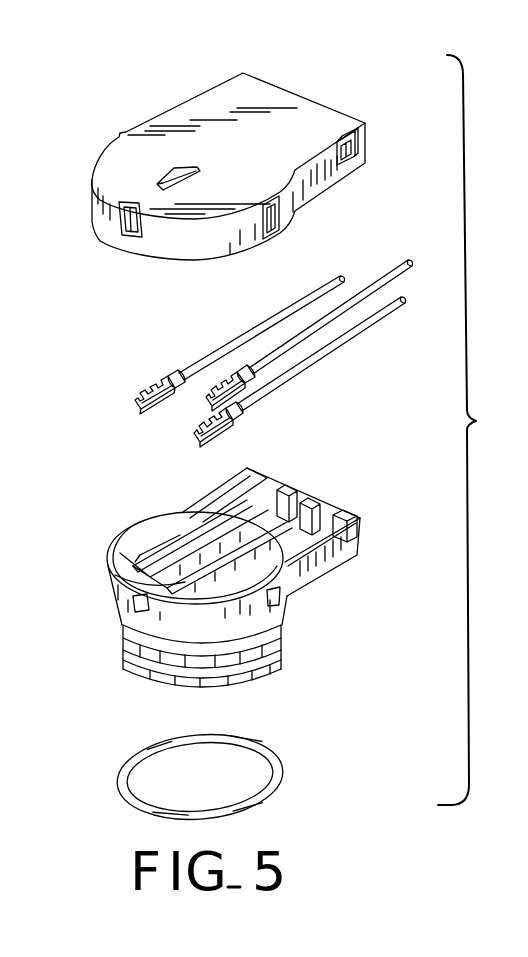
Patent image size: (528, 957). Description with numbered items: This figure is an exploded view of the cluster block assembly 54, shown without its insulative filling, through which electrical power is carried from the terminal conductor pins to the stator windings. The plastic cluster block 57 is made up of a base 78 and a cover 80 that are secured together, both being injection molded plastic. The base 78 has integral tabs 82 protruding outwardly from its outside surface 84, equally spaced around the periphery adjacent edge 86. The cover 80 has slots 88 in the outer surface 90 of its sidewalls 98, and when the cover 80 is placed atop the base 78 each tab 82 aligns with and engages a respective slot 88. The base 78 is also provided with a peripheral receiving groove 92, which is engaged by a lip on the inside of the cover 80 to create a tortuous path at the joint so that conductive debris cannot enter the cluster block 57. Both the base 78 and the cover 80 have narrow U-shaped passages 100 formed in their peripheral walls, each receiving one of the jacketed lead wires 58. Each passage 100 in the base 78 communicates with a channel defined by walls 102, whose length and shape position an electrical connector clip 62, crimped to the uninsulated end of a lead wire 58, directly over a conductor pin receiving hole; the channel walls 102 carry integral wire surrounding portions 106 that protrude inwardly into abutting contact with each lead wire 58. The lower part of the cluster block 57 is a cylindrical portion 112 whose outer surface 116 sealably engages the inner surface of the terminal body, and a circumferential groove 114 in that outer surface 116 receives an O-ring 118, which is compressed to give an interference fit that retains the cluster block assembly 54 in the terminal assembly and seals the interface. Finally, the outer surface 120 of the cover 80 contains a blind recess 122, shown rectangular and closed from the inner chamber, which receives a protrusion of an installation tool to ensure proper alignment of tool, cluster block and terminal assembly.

The cluster block assembly 54 is at (472, 430).
The cluster block 57 is at (126, 262).
The jacketed lead wires 58 is at (291, 338).
The electrical connector clip 62 is at (232, 422).
The base 78 is at (229, 576).
The cover 80 is at (260, 158).
The tabs 82 is at (356, 536).
The outside surface 84 is at (357, 553).
The edge 86 is at (345, 512).
The slots 88 is at (352, 148).
The outer surface 90 is at (333, 176).
The peripheral receiving groove 92 is at (281, 573).
The sidewalls 98 is at (262, 246).
The U-shaped passages 100 is at (125, 545).
The walls 102 is at (264, 483).
The wire surrounding portions 106 is at (210, 512).
The cylindrical portion 112 is at (263, 676).
The groove 114 is at (125, 641).
The outer surface 116 is at (147, 669).
The O-ring 118 is at (285, 777).
The outer surface 120 is at (227, 112).
The blind recess 122 is at (173, 170).